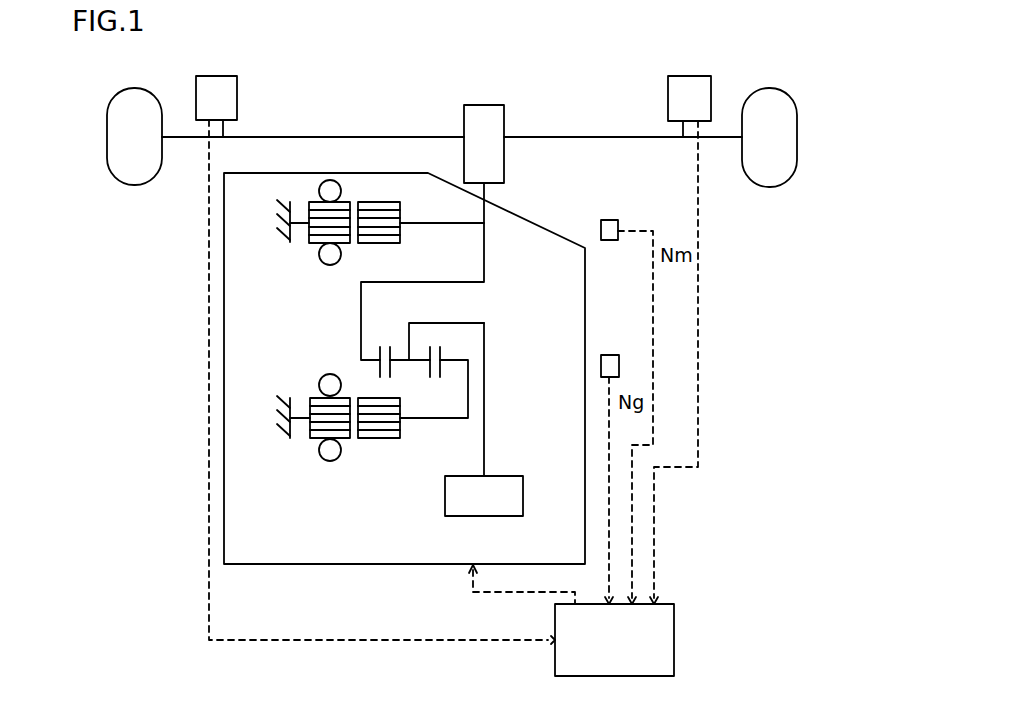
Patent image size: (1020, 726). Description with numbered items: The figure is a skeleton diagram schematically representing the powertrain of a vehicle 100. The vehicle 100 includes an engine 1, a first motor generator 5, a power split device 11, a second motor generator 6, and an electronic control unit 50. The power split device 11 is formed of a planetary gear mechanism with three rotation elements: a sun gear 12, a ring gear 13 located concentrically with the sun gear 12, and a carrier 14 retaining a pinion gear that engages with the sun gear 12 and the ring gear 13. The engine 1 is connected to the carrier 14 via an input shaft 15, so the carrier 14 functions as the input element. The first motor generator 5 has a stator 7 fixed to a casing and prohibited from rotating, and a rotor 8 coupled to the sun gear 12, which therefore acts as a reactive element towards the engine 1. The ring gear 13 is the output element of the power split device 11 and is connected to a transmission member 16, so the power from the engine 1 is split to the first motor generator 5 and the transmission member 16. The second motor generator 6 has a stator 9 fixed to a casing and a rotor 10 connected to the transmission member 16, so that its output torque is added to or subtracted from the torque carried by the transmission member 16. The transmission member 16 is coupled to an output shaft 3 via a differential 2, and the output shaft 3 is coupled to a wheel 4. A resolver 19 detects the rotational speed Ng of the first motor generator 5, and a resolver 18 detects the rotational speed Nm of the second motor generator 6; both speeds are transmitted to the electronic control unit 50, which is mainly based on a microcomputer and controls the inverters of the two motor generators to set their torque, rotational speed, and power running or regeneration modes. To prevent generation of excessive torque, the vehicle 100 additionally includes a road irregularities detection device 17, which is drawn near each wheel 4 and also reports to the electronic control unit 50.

The engine 1 is at (513, 496).
The differential 2 is at (484, 116).
The output shaft 3 is at (351, 134).
The wheel 4 is at (134, 98).
The first motor generator 5 is at (323, 436).
The second motor generator 6 is at (341, 241).
The stator 7 is at (320, 398).
The rotor 8 is at (380, 440).
The stator 9 is at (318, 203).
The rotor 10 is at (380, 203).
The power split device 11 is at (412, 360).
The sun gear 12 is at (445, 357).
The ring gear 13 is at (375, 352).
The carrier 14 is at (406, 348).
The input shaft 15 is at (486, 440).
The transmission member 16 is at (486, 251).
The road irregularities detection device 17 is at (237, 98).
The resolver 18 is at (608, 220).
The resolver 19 is at (607, 355).
The electronic control unit 50 is at (674, 640).
The vehicle 100 is at (148, 358).